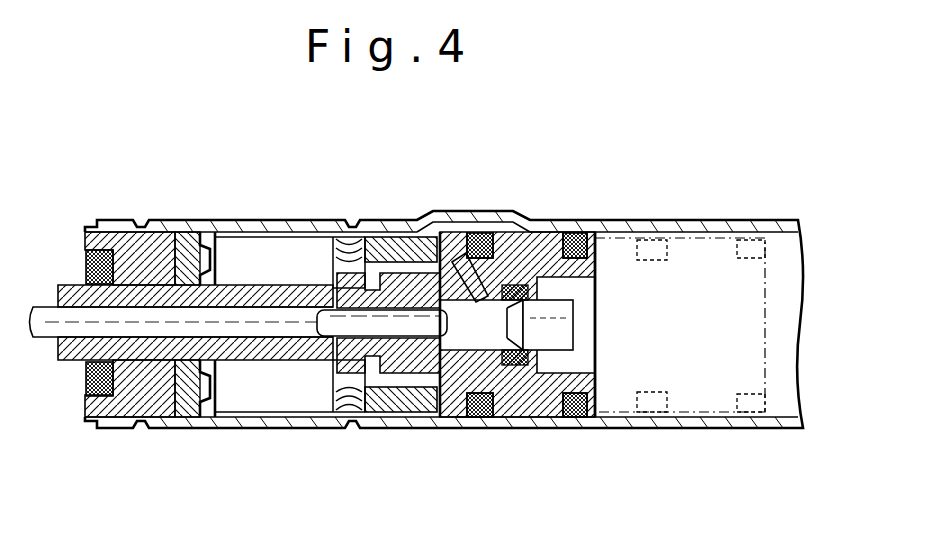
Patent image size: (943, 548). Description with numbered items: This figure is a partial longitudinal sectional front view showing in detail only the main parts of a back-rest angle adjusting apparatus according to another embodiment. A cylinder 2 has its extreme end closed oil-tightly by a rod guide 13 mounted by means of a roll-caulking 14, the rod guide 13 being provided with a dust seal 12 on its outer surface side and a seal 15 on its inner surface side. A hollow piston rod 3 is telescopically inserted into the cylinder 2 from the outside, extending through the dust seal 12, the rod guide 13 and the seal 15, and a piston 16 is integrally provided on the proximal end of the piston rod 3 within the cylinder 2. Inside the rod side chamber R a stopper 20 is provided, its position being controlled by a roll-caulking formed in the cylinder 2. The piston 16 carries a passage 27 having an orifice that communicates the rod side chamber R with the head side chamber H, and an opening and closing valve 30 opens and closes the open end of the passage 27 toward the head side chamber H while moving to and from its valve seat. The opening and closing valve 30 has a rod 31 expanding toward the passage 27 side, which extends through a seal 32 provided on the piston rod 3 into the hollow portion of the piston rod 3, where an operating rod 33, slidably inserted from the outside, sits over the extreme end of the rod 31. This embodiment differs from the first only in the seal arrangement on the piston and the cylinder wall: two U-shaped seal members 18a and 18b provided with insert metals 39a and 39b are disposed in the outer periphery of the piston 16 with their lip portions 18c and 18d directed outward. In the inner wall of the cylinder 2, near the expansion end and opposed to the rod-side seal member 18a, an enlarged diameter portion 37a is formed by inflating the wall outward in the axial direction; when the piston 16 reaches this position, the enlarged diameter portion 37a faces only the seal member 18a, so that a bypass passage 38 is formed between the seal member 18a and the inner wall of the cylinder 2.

The cylinder 2 is at (232, 428).
The piston rod 3 is at (291, 290).
The dust seal 12 is at (86, 270).
The rod guide 13 is at (119, 240).
The roll-caulking 14 is at (140, 428).
The seal 15 is at (188, 245).
The piston 16 is at (548, 384).
The U-shaped seal member 18a is at (447, 428).
The U-shaped seal member 18b is at (650, 238).
The lip portion 18c is at (460, 428).
The lip portion 18d is at (583, 234).
The stopper 20 is at (352, 240).
The passage 27 is at (449, 262).
The opening and closing valve 30 is at (560, 318).
The rod 31 is at (333, 350).
The seal 32 is at (393, 240).
The operating rod 33 is at (43, 340).
The enlarged diameter portion 37a is at (512, 212).
The bypass passage 38 is at (480, 233).
The insert metal 39a is at (490, 428).
The insert metal 39b is at (572, 428).
The rod side chamber R is at (258, 428).
The head side chamber H is at (788, 428).